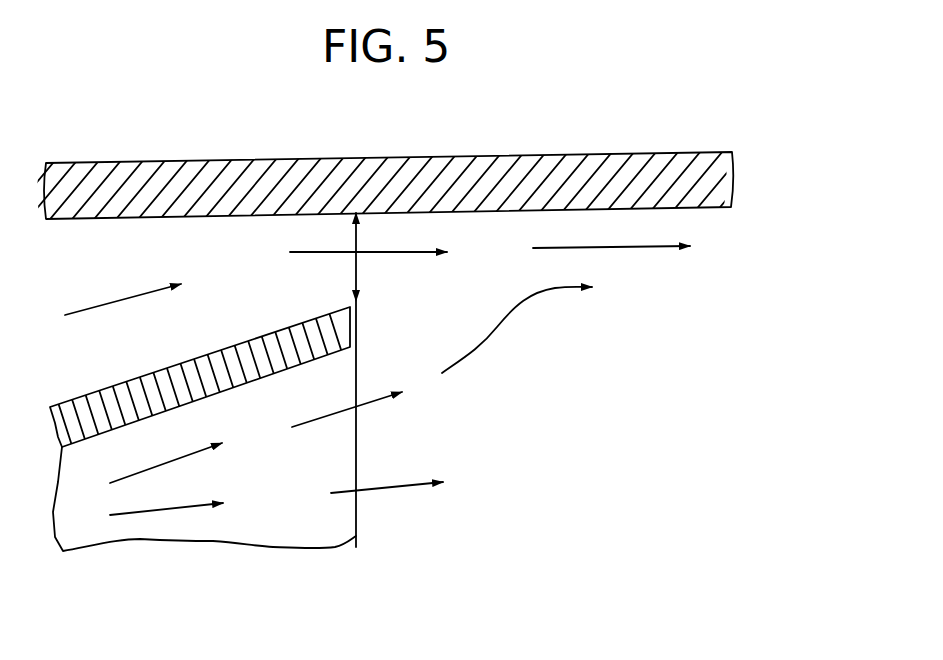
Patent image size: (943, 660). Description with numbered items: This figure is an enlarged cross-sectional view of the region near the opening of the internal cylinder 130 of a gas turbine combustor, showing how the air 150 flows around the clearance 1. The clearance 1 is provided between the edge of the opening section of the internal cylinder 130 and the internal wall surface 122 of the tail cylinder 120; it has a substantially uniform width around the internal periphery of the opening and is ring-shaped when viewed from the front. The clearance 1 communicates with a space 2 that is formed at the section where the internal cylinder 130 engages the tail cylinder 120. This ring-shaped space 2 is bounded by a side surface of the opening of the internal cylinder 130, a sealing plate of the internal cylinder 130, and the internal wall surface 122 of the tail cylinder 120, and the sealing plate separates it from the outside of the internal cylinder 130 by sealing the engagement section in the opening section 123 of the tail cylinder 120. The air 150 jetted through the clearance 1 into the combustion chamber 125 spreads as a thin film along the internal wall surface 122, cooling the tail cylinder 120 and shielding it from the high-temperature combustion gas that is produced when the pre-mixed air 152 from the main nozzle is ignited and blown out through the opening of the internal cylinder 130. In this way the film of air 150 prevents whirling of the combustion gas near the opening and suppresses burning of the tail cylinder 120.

The clearance 1 is at (356, 282).
The space 2 is at (221, 256).
The tail cylinder 120 is at (452, 163).
The internal wall surface 122 is at (462, 211).
The opening section 123 is at (357, 423).
The combustion chamber 125 is at (759, 312).
The internal cylinder 130 is at (230, 387).
The air 150 is at (103, 305).
The pre-mixed air 152 is at (125, 478).